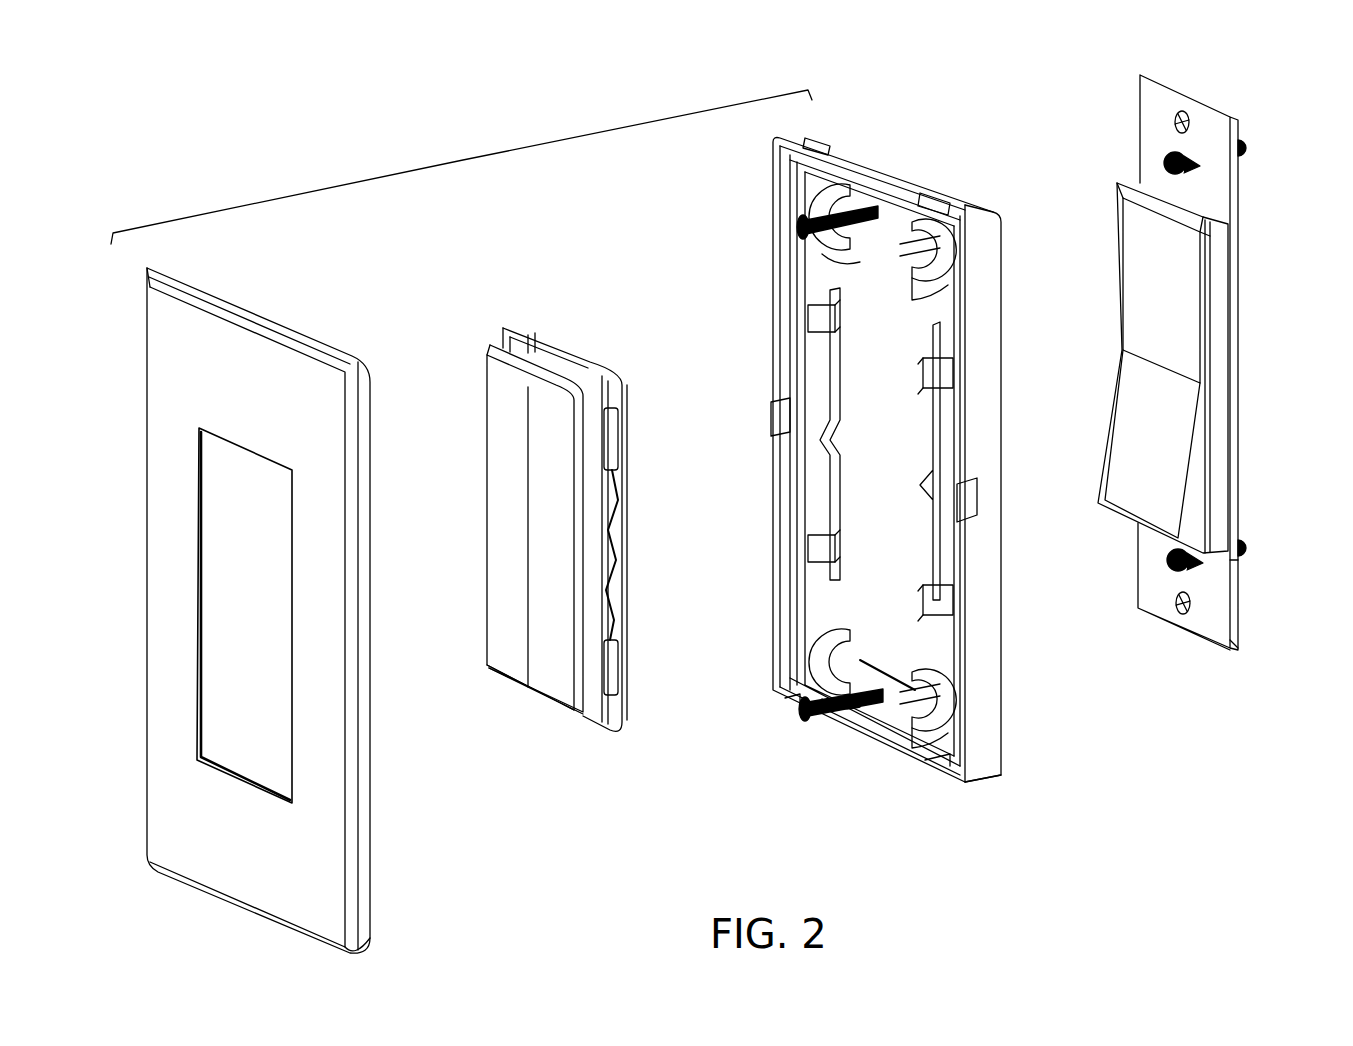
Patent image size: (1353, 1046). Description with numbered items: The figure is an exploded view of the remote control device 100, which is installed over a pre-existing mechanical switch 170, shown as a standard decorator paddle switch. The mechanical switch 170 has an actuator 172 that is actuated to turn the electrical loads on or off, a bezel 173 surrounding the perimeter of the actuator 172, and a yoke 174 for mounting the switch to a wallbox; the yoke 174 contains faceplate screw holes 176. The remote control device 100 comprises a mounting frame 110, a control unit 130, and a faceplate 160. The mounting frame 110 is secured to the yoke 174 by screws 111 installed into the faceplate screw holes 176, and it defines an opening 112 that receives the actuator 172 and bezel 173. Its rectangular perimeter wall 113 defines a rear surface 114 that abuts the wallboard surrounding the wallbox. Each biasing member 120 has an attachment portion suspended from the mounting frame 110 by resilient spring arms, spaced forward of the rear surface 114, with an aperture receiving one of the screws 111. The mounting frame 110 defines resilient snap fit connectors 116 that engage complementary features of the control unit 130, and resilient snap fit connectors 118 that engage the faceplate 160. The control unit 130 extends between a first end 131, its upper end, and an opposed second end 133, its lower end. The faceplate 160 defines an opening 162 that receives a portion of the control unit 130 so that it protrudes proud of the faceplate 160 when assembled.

The remote control device 100 is at (463, 158).
The mounting frame 110 is at (873, 466).
The screws 111 is at (805, 226).
The opening 112 is at (885, 487).
The perimeter wall 113 is at (983, 693).
The rear surface 114 is at (1003, 288).
The resilient snap fit connectors 116 is at (817, 320).
The resilient snap fit connectors 118 is at (803, 140).
The biasing member 120 is at (935, 235).
The control unit 130 is at (518, 528).
The first end 131 is at (556, 357).
The second end 133 is at (533, 698).
The faceplate 160 is at (281, 610).
The opening 162 is at (258, 583).
The mechanical switch 170 is at (1193, 408).
The actuator 172 is at (1130, 478).
The bezel 173 is at (1222, 470).
The yoke 174 is at (1238, 605).
The faceplate screw holes 176 is at (1175, 122).